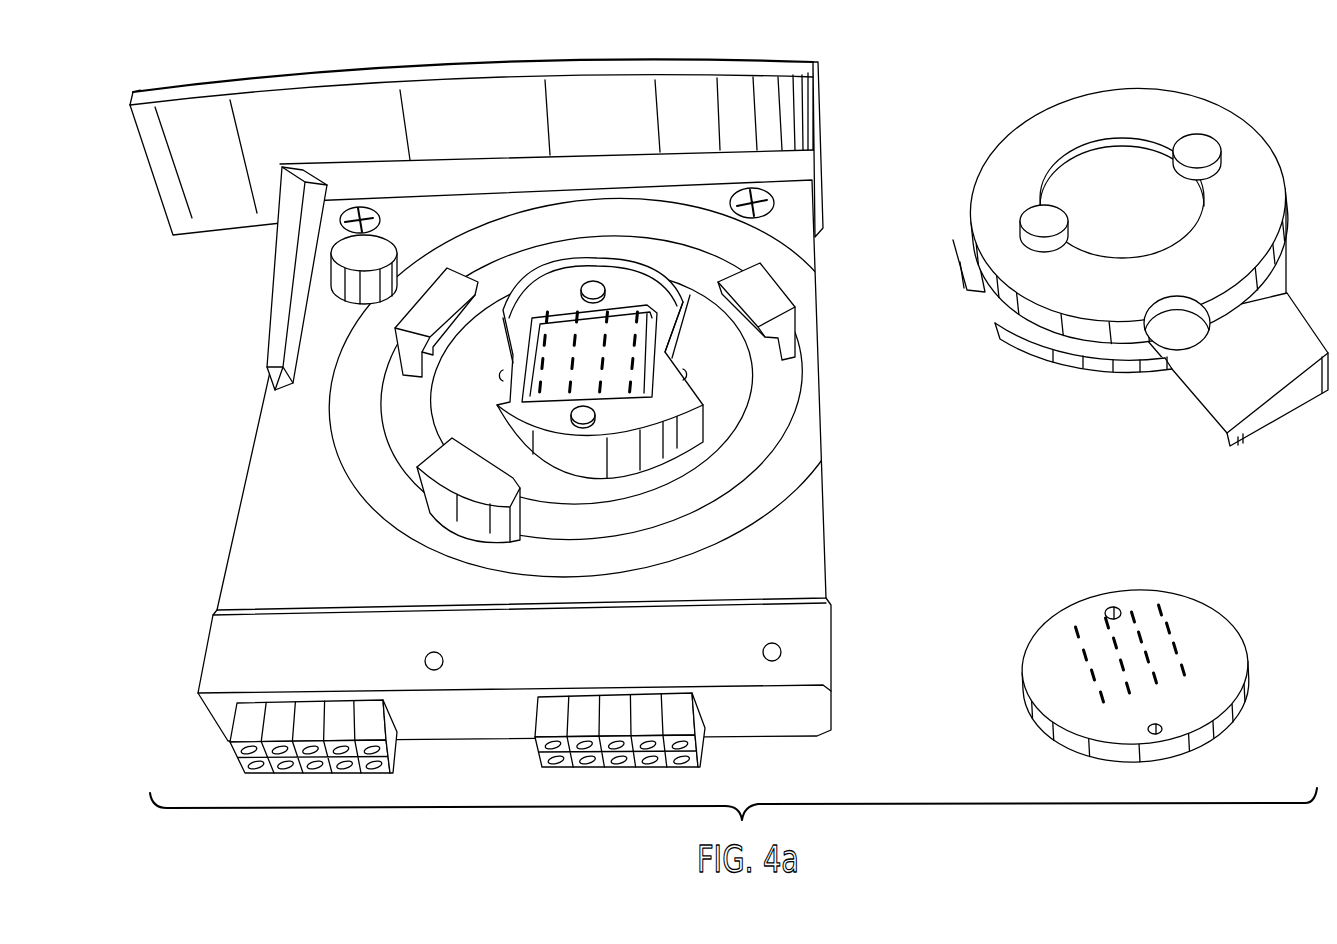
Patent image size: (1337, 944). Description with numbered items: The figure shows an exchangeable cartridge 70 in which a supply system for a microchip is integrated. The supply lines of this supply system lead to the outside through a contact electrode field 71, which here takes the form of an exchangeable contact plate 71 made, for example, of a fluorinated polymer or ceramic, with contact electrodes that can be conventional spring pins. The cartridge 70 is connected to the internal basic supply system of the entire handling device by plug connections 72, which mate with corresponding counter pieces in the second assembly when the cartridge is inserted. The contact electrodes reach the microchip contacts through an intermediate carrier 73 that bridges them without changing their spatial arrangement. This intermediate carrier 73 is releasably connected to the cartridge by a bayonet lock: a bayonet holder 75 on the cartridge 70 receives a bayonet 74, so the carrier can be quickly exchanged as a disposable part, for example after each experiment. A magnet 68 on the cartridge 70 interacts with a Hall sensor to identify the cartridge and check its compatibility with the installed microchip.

The magnet 68 is at (340, 253).
The cartridge 70 is at (855, 428).
The contact electrode field 71 is at (647, 327).
The plug connections 72 is at (651, 703).
The intermediate carrier 73 is at (1212, 628).
The bayonet 74 is at (1127, 350).
The bayonet holder 75 is at (443, 463).